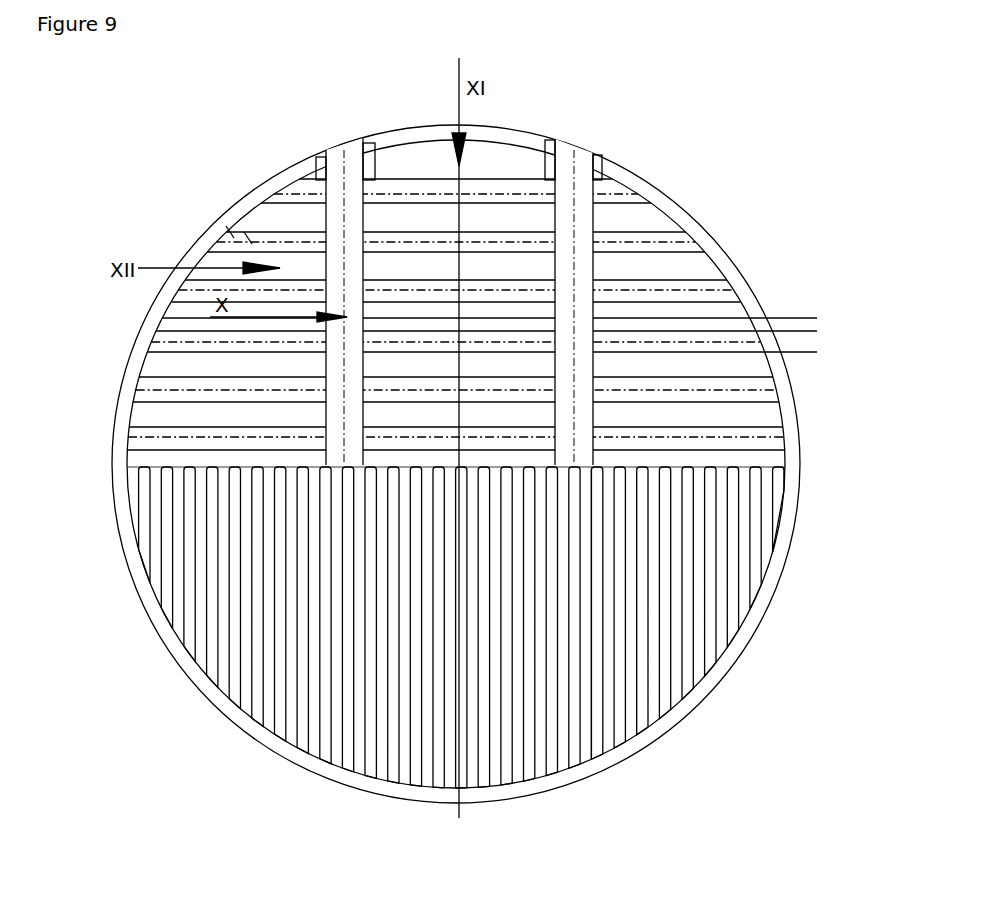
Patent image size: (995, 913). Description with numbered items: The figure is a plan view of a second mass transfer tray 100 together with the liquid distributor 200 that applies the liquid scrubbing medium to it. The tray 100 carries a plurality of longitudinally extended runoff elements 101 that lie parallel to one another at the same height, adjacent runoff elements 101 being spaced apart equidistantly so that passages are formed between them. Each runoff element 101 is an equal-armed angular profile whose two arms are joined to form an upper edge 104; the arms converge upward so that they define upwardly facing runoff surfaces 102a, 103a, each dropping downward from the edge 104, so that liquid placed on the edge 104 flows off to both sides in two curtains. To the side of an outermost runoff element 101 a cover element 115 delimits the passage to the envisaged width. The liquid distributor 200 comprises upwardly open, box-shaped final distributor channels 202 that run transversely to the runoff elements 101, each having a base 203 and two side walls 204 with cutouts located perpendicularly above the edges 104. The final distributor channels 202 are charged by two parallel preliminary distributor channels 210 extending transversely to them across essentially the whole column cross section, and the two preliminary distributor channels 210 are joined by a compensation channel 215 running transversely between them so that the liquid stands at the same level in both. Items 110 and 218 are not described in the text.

The second mass transfer tray 100 is at (180, 686).
The runoff element 101 is at (697, 602).
The runoff surface 102a is at (588, 732).
The runoff surface 103a is at (597, 723).
The edge 104 is at (692, 628).
The vessel shell 110 is at (705, 700).
The cover element 115 is at (130, 482).
The first liquid distributor 200 is at (582, 136).
The final distributor channel 202 is at (303, 240).
The base 203 is at (313, 232).
The side wall 204 is at (245, 238).
The preliminary distributor channel 210 is at (343, 163).
The compensation channel 215 is at (553, 308).
The retaining ring 218 is at (672, 212).